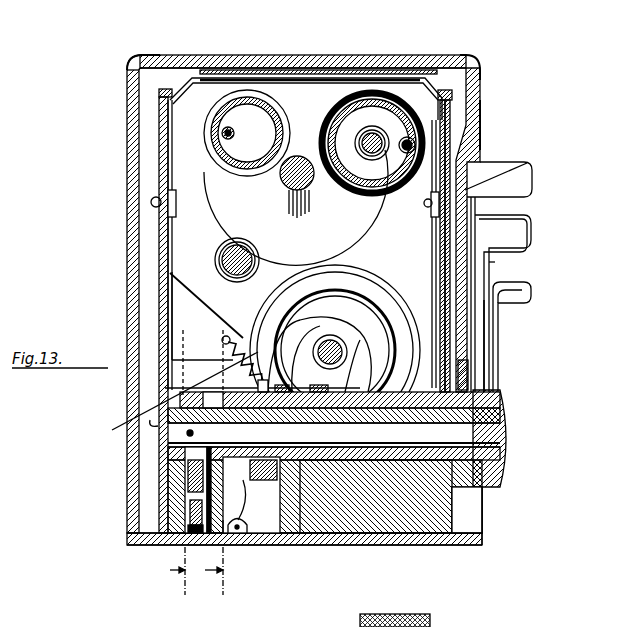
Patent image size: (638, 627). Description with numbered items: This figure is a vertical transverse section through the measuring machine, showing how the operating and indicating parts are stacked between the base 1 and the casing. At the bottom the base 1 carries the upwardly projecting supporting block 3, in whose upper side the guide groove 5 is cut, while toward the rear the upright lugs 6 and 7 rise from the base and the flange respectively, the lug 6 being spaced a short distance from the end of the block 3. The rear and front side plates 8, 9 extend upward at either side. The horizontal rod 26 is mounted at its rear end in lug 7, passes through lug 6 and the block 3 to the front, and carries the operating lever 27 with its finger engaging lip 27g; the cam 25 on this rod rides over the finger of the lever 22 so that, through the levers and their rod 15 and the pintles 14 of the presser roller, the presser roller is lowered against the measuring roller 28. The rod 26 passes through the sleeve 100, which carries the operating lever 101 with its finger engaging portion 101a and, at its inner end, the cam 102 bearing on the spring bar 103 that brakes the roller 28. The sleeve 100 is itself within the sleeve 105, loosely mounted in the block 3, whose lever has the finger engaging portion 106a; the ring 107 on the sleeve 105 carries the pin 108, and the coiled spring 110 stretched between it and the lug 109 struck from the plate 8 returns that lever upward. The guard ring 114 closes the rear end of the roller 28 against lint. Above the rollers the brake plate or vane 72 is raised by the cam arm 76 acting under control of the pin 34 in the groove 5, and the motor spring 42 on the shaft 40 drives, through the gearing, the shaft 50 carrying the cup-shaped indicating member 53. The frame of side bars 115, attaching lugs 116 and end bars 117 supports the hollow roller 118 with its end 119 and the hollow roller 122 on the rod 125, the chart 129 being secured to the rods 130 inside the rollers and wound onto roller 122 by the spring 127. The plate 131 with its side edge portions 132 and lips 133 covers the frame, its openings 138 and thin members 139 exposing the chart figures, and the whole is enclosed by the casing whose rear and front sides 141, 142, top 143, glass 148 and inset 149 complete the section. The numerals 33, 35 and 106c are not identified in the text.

The base 1 is at (244, 547).
The supporting block 3 is at (445, 507).
The guide groove 5 is at (346, 394).
The upright lug 6 is at (211, 540).
The upright lug 7 is at (173, 473).
The rear side plate 8 is at (168, 272).
The front side plate 9 is at (460, 263).
The end pintles 14 is at (173, 571).
The rod 15 is at (215, 571).
The lever 22 is at (182, 532).
The cam 25 is at (185, 468).
The rod 26 is at (340, 455).
The operating lever 27 is at (499, 378).
The finger engaging lip 27g is at (532, 292).
The measuring roller 28 is at (378, 283).
The cam lobe 33 is at (362, 364).
The pin 34 is at (325, 386).
The hub 35 is at (347, 351).
The shaft 40 is at (221, 259).
The spring 42 is at (242, 242).
The shaft 50 is at (305, 207).
The cup-shaped indicating member 53 is at (357, 233).
The brake plate or vane 72 is at (165, 390).
The cam arm 76 is at (170, 397).
The sleeve 100 is at (410, 455).
The operating lever 101 is at (486, 362).
The finger engaging portion 101a is at (532, 230).
The cam 102 is at (248, 484).
The spring bar 103 is at (238, 540).
The sleeve 105 is at (448, 463).
The finger engaging portion 106a is at (533, 182).
The flange 106c is at (472, 278).
The ring 107 is at (294, 547).
The pin 108 is at (290, 336).
The lug 109 is at (215, 311).
The coiled spring 110 is at (227, 340).
The guard ring 114 is at (390, 318).
The side bars 115 is at (180, 167).
The attaching lugs 116 is at (176, 214).
The end bars 117 is at (318, 75).
The hollow roller 118 is at (243, 173).
The roller end 119 is at (265, 176).
The hollow roller 122 is at (395, 195).
The rod 125 is at (374, 130).
The spring 127 is at (355, 127).
The chart 129 is at (312, 205).
The rods 130 is at (234, 134).
The plate 131 is at (350, 77).
The side edge portions 132 is at (178, 85).
The lips 133 is at (170, 97).
The elongated openings 138 is at (252, 80).
The elongated thin member 139 is at (226, 80).
The rear side 141 is at (163, 252).
The front side 142 is at (481, 125).
The top 143 is at (166, 66).
The glass 148 is at (410, 62).
The inset 149 is at (527, 163).